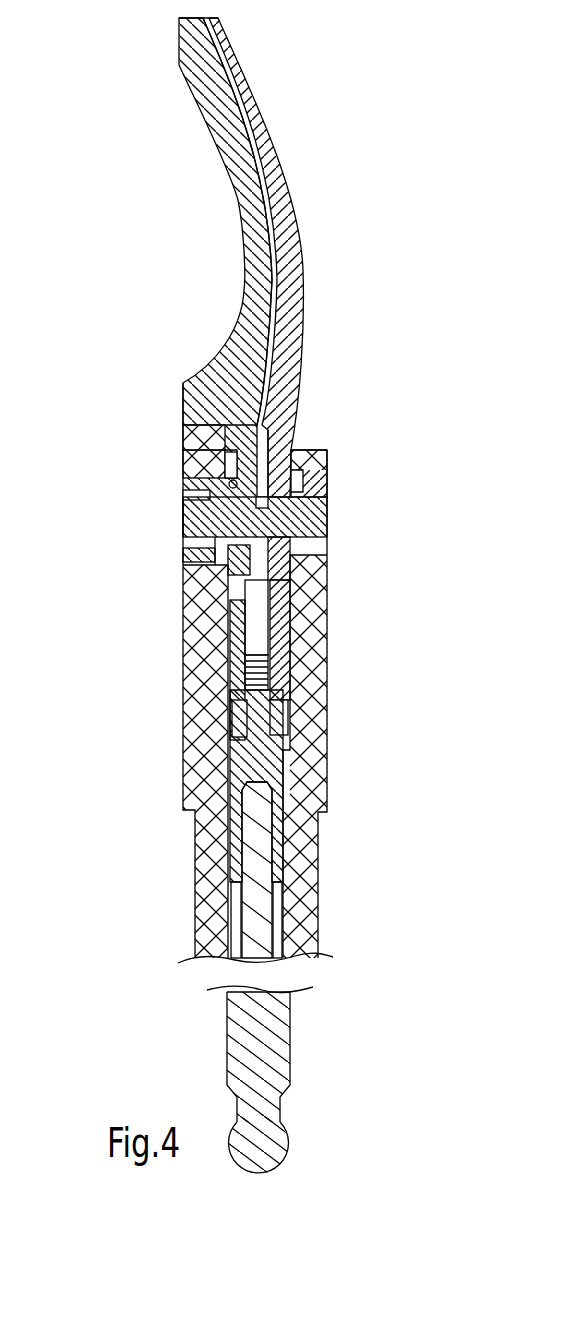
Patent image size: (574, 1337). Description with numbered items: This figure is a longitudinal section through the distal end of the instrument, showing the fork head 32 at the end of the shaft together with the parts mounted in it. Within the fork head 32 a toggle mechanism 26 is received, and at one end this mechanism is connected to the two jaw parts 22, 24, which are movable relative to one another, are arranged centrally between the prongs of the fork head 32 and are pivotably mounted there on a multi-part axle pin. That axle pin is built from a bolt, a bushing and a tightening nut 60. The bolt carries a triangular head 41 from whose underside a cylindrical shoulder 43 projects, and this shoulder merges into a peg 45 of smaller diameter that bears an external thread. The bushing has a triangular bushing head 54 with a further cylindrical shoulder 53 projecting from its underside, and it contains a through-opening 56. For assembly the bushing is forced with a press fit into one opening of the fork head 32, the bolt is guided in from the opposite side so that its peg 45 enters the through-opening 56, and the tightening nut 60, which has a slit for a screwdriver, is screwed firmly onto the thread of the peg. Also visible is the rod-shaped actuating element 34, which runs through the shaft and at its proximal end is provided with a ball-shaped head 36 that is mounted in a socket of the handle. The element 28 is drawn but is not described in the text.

The jaw part 22 is at (238, 172).
The jaw part 24 is at (293, 222).
The toggle mechanism 26 is at (235, 640).
The spring element 28 is at (297, 660).
The fork head 32 is at (300, 784).
The rod-shaped actuating element 34 is at (300, 848).
The ball-shaped head 36 is at (258, 1143).
The triangular head 41 is at (325, 538).
The cylindrical shoulder 43 is at (325, 500).
The peg 45 is at (182, 524).
The cylindrical shoulder 53 is at (182, 470).
The triangular bushing head 54 is at (182, 487).
The through-opening 56 is at (250, 772).
The tightening nut 60 is at (182, 548).